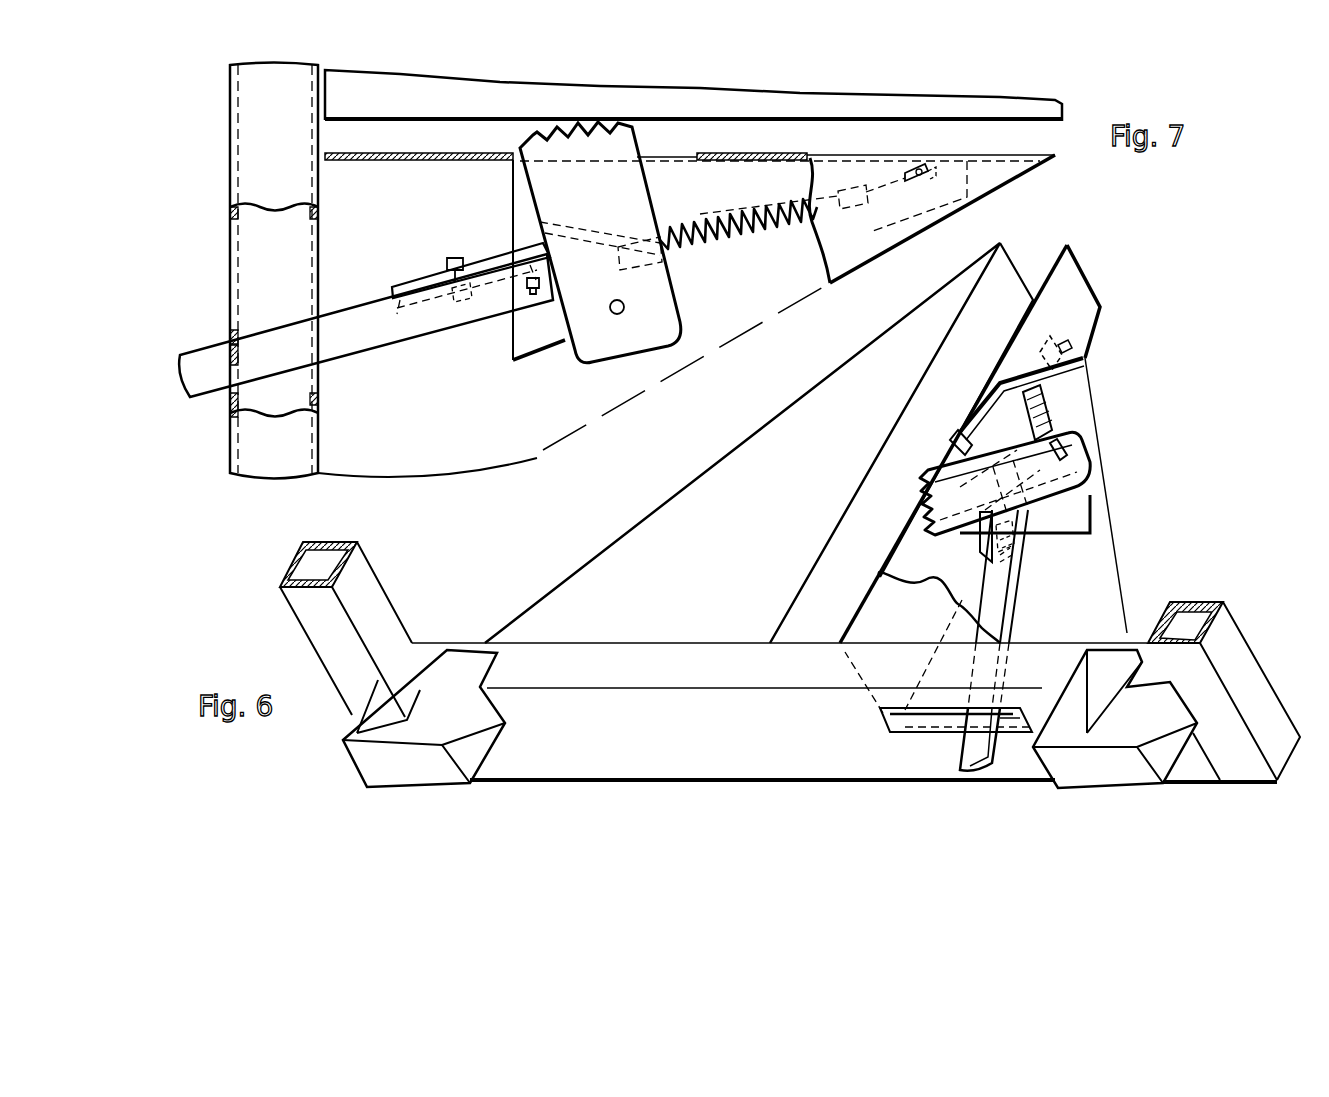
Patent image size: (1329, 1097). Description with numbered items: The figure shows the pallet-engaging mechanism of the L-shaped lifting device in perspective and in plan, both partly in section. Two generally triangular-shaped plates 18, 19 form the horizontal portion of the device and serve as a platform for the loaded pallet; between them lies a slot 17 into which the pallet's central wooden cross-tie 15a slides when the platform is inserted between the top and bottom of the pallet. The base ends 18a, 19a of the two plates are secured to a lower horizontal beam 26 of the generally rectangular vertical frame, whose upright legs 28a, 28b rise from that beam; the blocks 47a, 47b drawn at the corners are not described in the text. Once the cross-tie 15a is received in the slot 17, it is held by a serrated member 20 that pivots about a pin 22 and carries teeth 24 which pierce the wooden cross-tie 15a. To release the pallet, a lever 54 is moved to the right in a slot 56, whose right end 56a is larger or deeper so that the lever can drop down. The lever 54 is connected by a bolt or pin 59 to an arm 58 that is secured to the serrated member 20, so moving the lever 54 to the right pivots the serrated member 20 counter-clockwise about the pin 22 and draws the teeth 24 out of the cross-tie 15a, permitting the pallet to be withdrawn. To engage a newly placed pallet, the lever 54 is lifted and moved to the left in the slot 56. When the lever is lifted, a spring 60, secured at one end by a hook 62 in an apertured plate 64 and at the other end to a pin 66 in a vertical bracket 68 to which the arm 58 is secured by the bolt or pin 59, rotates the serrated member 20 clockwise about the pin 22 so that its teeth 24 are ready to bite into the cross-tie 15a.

In FIG. 7, the cross-tie 15a is at (1040, 100).
In FIG. 7, the slot 17 is at (822, 146).
In FIG. 6, the slot 17 is at (1035, 268).
In FIG. 6, the triangular-shaped plate 18 is at (730, 476).
In FIG. 6, the base end 18a is at (598, 643).
In FIG. 7, the triangular-shaped plate 19 is at (1015, 166).
In FIG. 6, the triangular-shaped plate 19 is at (1062, 266).
In FIG. 6, the base end 19a is at (1030, 643).
In FIG. 7, the serrated member 20 is at (600, 248).
In FIG. 6, the serrated member 20 is at (1041, 462).
In FIG. 7, the pin 22 is at (624, 303).
In FIG. 6, the pin 22 is at (1068, 444).
In FIG. 7, the teeth 24 is at (576, 131).
In FIG. 6, the teeth 24 is at (931, 502).
In FIG. 7, the lower horizontal beam 26 is at (255, 136).
In FIG. 6, the lower horizontal beam 26 is at (655, 768).
In FIG. 6, the upright leg 28a is at (1228, 626).
In FIG. 6, the upright leg 28b is at (365, 565).
In FIG. 6, the clamp block 47a is at (1090, 782).
In FIG. 6, the clamp block 47b is at (360, 760).
In FIG. 7, the lever 54 is at (275, 326).
In FIG. 6, the lever 54 is at (965, 768).
In FIG. 7, the slot 56 is at (235, 297).
In FIG. 6, the slot 56 is at (925, 715).
In FIG. 7, the right end of slot 56a is at (232, 351).
In FIG. 6, the right end of slot 56a is at (1012, 722).
In FIG. 7, the arm 58 is at (402, 288).
In FIG. 6, the arm 58 is at (978, 548).
In FIG. 7, the bolt or pin 59 is at (455, 256).
In FIG. 7, the spring 60 is at (680, 240).
In FIG. 6, the spring 60 is at (1052, 416).
In FIG. 7, the hook 62 is at (858, 197).
In FIG. 7, the apertured plate 64 is at (921, 170).
In FIG. 6, the apertured plate 64 is at (1075, 348).
In FIG. 7, the pin 66 is at (533, 294).
In FIG. 7, the vertical bracket 68 is at (422, 318).
In FIG. 6, the vertical bracket 68 is at (1028, 550).